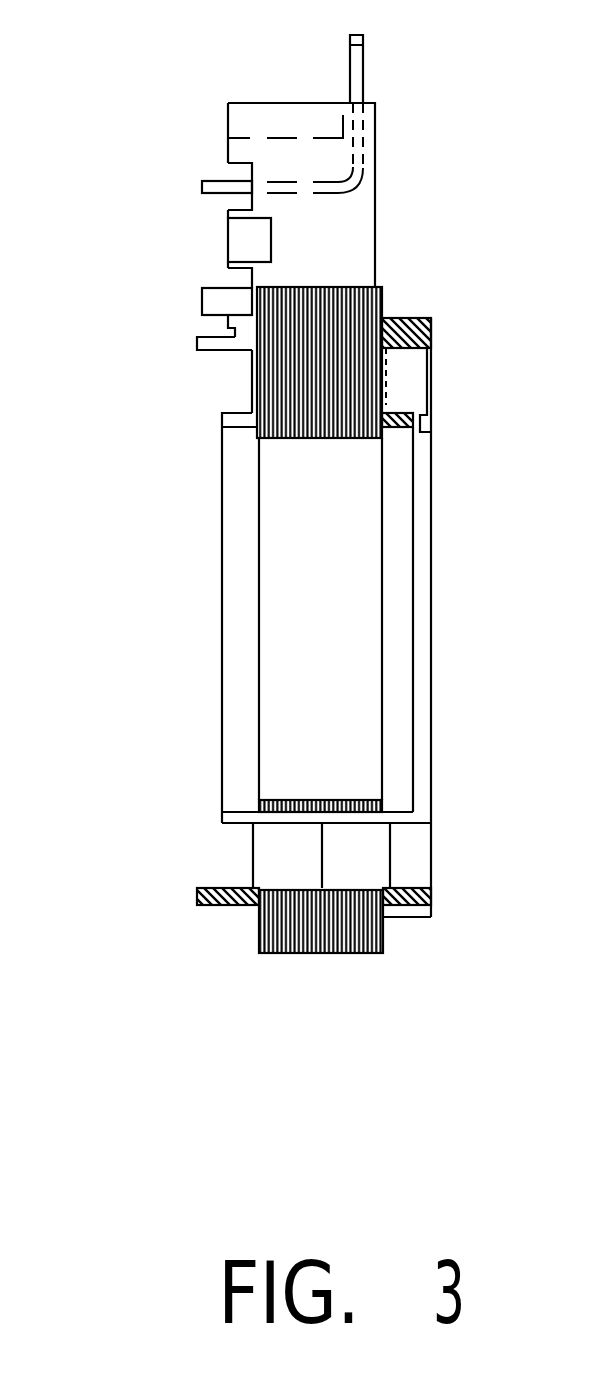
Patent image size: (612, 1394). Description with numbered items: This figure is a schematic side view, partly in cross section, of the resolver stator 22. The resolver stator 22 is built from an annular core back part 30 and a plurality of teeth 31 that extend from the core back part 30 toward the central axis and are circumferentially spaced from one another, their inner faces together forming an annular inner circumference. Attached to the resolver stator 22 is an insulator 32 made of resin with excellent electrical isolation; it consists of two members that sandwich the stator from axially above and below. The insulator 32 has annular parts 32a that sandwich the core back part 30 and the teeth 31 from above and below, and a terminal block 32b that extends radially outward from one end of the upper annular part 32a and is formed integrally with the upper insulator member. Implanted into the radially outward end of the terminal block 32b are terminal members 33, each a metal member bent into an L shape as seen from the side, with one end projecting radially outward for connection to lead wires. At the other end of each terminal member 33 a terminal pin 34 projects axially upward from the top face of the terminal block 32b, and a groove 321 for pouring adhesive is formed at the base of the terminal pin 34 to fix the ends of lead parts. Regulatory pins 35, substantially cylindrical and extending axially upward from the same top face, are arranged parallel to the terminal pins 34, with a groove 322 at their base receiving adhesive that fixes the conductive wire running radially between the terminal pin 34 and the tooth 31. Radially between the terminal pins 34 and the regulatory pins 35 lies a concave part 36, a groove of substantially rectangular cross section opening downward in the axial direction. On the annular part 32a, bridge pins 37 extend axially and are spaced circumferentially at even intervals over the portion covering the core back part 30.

The resolver stator 22 is at (125, 74).
The core back part 30 is at (352, 953).
The teeth 31 is at (322, 438).
The insulator 32 is at (420, 318).
The annular part 32a is at (228, 906).
The terminal block 32b is at (228, 118).
The groove 321 is at (230, 178).
The groove 322 is at (228, 282).
The terminal member 33 is at (363, 72).
The terminal pin 34 is at (205, 181).
The regulatory pin 35 is at (202, 310).
The concave part 36 is at (230, 257).
The bridge pins 37 is at (197, 343).